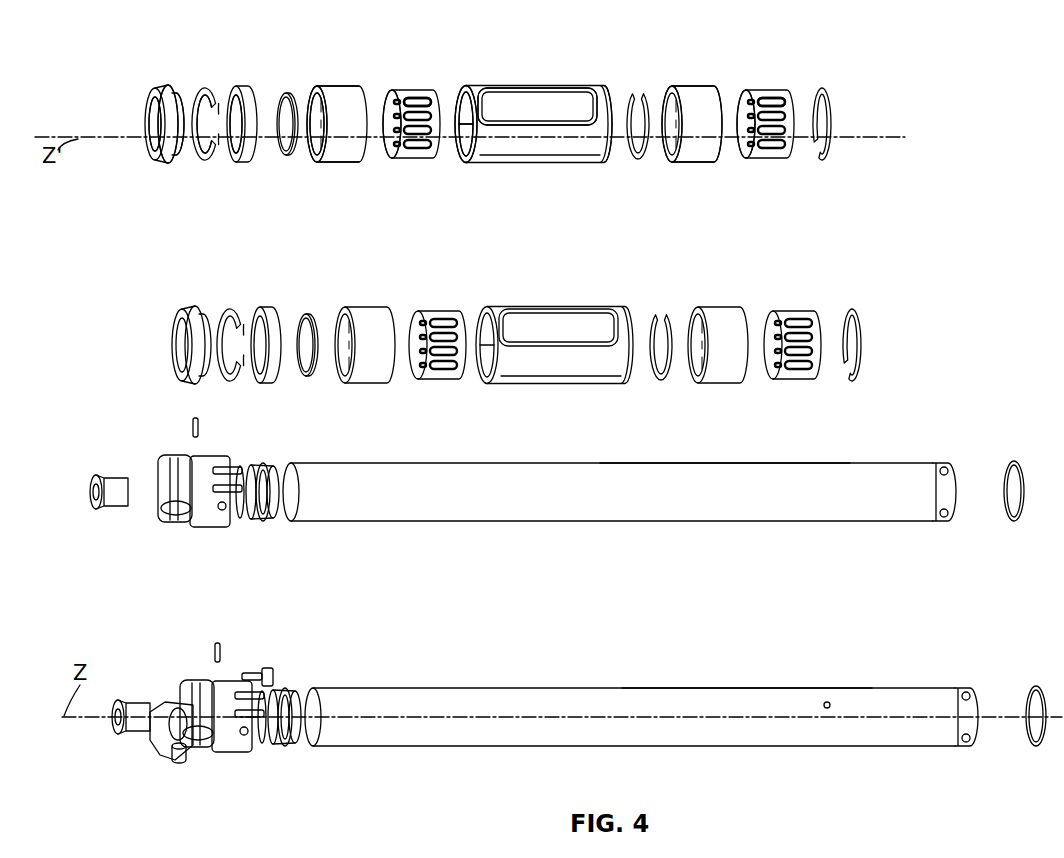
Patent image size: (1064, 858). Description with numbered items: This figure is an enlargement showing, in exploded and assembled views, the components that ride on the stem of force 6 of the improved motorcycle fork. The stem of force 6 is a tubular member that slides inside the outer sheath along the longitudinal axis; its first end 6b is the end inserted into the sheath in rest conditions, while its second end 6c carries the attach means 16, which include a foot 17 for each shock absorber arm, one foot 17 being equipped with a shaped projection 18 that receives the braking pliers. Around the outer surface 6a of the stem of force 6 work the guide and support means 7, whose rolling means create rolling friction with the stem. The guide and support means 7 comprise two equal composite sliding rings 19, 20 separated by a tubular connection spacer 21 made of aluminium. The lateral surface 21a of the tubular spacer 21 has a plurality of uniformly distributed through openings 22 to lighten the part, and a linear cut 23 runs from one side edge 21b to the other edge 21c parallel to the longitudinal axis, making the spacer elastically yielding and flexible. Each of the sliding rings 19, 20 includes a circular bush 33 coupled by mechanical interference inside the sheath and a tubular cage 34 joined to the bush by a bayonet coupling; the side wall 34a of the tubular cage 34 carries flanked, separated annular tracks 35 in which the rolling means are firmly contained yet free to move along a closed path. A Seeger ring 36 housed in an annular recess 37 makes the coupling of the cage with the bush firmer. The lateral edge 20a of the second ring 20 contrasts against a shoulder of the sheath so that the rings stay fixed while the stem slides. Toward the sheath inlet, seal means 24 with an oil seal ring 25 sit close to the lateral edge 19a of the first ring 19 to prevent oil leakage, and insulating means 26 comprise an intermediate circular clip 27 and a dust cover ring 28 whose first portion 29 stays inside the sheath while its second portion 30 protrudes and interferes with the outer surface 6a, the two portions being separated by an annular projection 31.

The stem of force 6 is at (664, 642).
The outer surface of the stem of force 6a is at (735, 497).
The first end of the stem of force 6b is at (912, 527).
The second end of the stem of force 6c is at (310, 534).
The guide and support means 7 is at (840, 112).
The attach means 16 is at (205, 534).
The foot 17 is at (163, 463).
The shaped projection 18 is at (160, 738).
The first sliding ring 19 is at (375, 84).
The lateral edge of the first ring 19a is at (317, 164).
The second sliding ring 20 is at (725, 80).
The lateral edge of the second ring 20a is at (731, 96).
The tubular connection spacer 21 is at (560, 92).
The lateral surface of the tubular spacer 21a is at (483, 148).
The side edge of the tubular spacer 21b is at (466, 167).
The other edge of the tubular spacer 21c is at (594, 150).
The through openings 22 is at (514, 104).
The linear cut 23 is at (449, 153).
The seal means 24 is at (243, 80).
The oil seal ring 25 is at (244, 163).
The insulating means 26 is at (186, 82).
The intermediate circular clip 27 is at (207, 162).
The dust cover ring 28 is at (143, 112).
The first portion of the dust cover ring 29 is at (180, 163).
The second portion of the dust cover ring 30 is at (150, 142).
The annular projection 31 is at (156, 160).
The circular bush 33 is at (345, 152).
The tubular cage 34 is at (428, 96).
The side wall of the tubular cage 34a is at (401, 92).
The annular tracks 35 is at (424, 106).
The Seeger ring 36 is at (288, 157).
The annular recess 37 is at (315, 92).